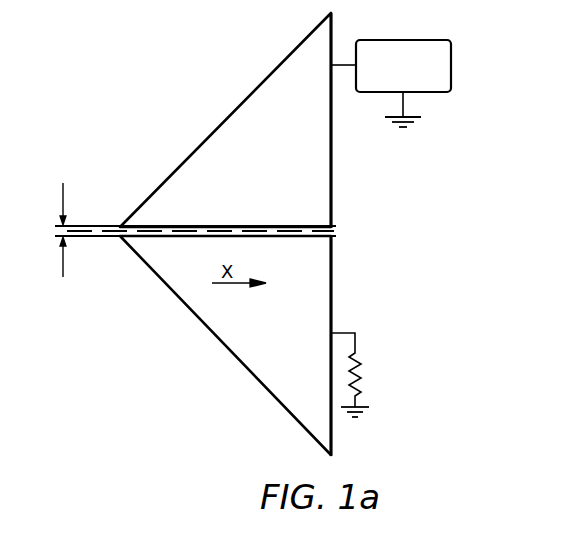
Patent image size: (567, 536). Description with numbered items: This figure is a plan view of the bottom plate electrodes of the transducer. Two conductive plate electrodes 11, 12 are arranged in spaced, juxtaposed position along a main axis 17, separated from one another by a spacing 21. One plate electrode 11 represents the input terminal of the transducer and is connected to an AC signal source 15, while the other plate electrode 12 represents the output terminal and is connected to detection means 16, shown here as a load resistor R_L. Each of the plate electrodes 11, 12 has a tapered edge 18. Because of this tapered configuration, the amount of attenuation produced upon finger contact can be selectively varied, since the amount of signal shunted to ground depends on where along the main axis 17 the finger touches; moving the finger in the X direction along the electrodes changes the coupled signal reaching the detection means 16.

The plate electrode 11 is at (333, 207).
The plate electrode 12 is at (325, 317).
The AC signal source 15 is at (450, 90).
The detection means 16 is at (360, 356).
The main axis 17 is at (348, 234).
The tapered edge 18 is at (192, 154).
The spacing 21 is at (63, 183).